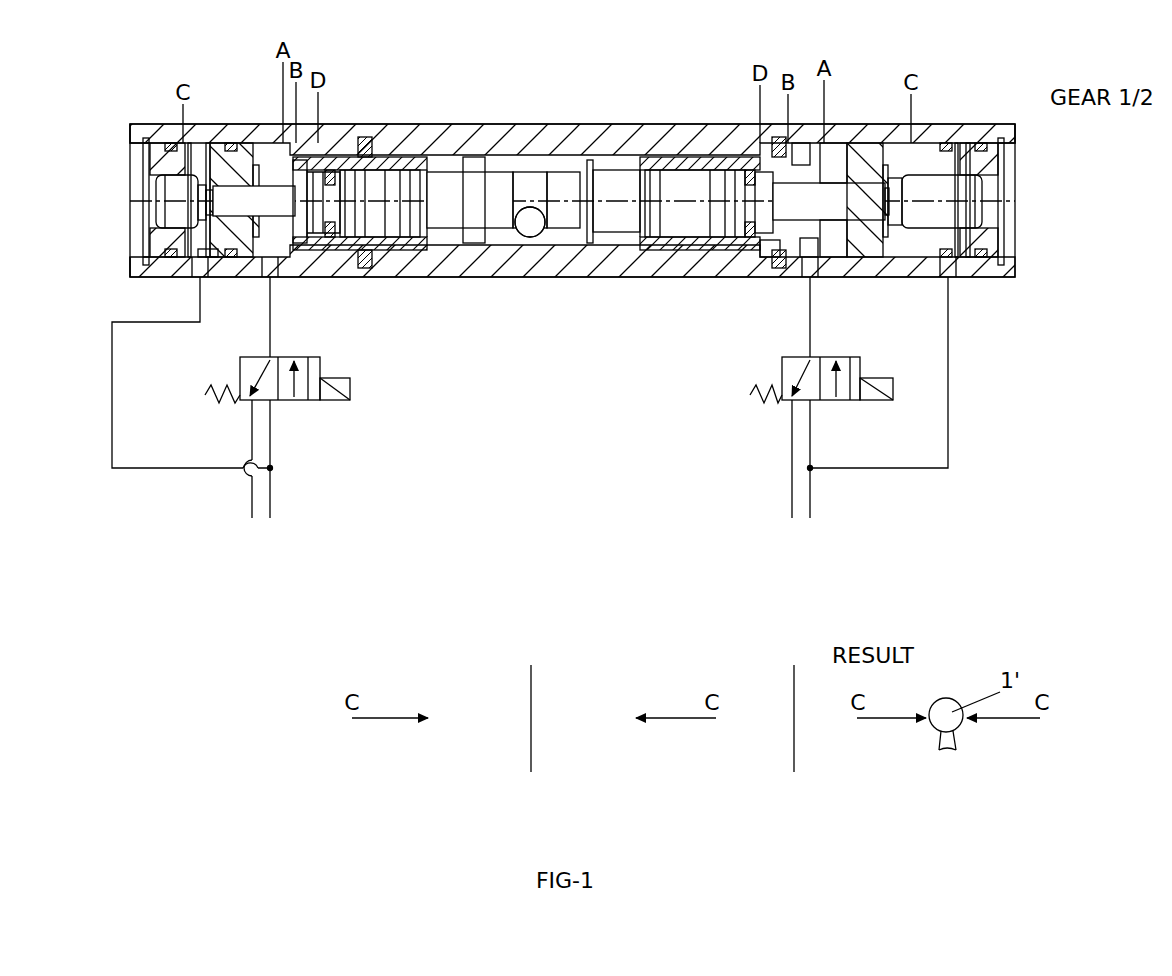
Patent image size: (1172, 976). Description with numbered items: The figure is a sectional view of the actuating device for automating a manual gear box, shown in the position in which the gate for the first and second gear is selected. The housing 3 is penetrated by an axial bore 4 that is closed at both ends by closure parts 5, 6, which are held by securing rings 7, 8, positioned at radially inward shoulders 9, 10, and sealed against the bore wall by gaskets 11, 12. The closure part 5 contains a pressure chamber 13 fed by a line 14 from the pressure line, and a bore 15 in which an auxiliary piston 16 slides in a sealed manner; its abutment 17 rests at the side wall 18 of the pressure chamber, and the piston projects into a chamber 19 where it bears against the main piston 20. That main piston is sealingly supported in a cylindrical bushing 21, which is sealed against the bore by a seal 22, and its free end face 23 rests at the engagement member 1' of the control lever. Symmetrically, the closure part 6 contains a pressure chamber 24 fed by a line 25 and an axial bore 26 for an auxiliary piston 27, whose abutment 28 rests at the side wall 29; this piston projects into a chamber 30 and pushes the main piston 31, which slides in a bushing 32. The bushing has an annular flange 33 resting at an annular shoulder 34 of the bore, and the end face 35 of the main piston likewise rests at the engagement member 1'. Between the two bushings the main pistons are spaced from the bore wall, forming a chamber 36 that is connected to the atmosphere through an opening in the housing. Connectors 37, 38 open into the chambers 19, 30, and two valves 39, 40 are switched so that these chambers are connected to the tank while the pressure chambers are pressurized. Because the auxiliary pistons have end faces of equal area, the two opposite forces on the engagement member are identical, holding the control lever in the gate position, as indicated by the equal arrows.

The engagement member 1' is at (549, 271).
The housing 3 is at (483, 135).
The bore 4 is at (462, 215).
The closure part 5 is at (143, 255).
The closure part 6 is at (1004, 253).
The securing ring 7 is at (130, 140).
The securing ring 8 is at (1015, 138).
The shoulder 9 is at (256, 150).
The shoulder 10 is at (770, 265).
The gasket 11 is at (132, 270).
The gasket 12 is at (946, 276).
The pressure chamber 13 is at (165, 210).
The line 14 is at (140, 470).
The bore 15 is at (218, 150).
The auxiliary piston 16 is at (313, 234).
The abutment 17 is at (165, 192).
The side wall 18 is at (193, 258).
The chamber 19 is at (268, 218).
The main piston 20 is at (402, 157).
The bushing 21 is at (375, 157).
The seal 22 is at (368, 265).
The free end face 23 is at (497, 232).
The pressure chamber 24 is at (932, 162).
The line 25 is at (948, 432).
The axial bore 26 is at (868, 160).
The auxiliary piston 27 is at (852, 252).
The abutment 28 is at (870, 242).
The side wall 29 is at (1003, 228).
The chamber 30 is at (825, 200).
The main piston 31 is at (692, 218).
The bushing 32 is at (705, 157).
The annular flange 33 is at (800, 150).
The annular shoulder 34 is at (810, 262).
The end face 35 is at (538, 210).
The chamber 36 is at (437, 158).
The connector 37 is at (280, 258).
The connector 38 is at (822, 260).
The valve 39 is at (226, 410).
The valve 40 is at (860, 412).